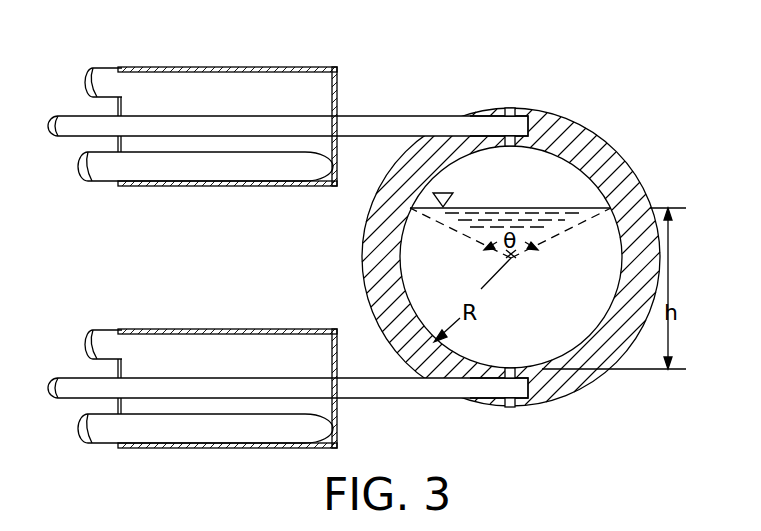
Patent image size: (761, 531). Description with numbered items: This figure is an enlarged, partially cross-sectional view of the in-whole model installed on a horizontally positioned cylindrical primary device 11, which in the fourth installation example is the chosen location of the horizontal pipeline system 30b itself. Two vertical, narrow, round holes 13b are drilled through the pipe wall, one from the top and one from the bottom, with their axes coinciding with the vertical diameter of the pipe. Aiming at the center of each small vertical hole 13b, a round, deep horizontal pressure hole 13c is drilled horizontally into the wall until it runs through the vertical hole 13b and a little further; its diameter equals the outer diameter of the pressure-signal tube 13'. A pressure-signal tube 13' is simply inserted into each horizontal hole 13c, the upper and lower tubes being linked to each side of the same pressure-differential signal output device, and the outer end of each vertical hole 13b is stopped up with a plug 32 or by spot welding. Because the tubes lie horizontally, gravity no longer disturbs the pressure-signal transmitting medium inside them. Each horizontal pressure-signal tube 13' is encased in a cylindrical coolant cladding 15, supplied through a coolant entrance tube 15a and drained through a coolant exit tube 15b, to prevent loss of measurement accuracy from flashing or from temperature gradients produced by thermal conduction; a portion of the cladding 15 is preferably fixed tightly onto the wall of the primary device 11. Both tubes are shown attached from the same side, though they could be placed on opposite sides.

The cylindrical primary device 11 is at (446, 257).
The horizontal pipeline system 30b is at (361, 274).
The pressure-signal tube 13' is at (274, 280).
The vertical pressure hole 13b is at (513, 146).
The horizontal pressure hole 13c is at (474, 108).
The plug 32 is at (515, 108).
The cylindrical coolant cladding 15 is at (200, 188).
The coolant entrance tube 15a is at (88, 185).
The coolant exit tube 15b is at (94, 70).